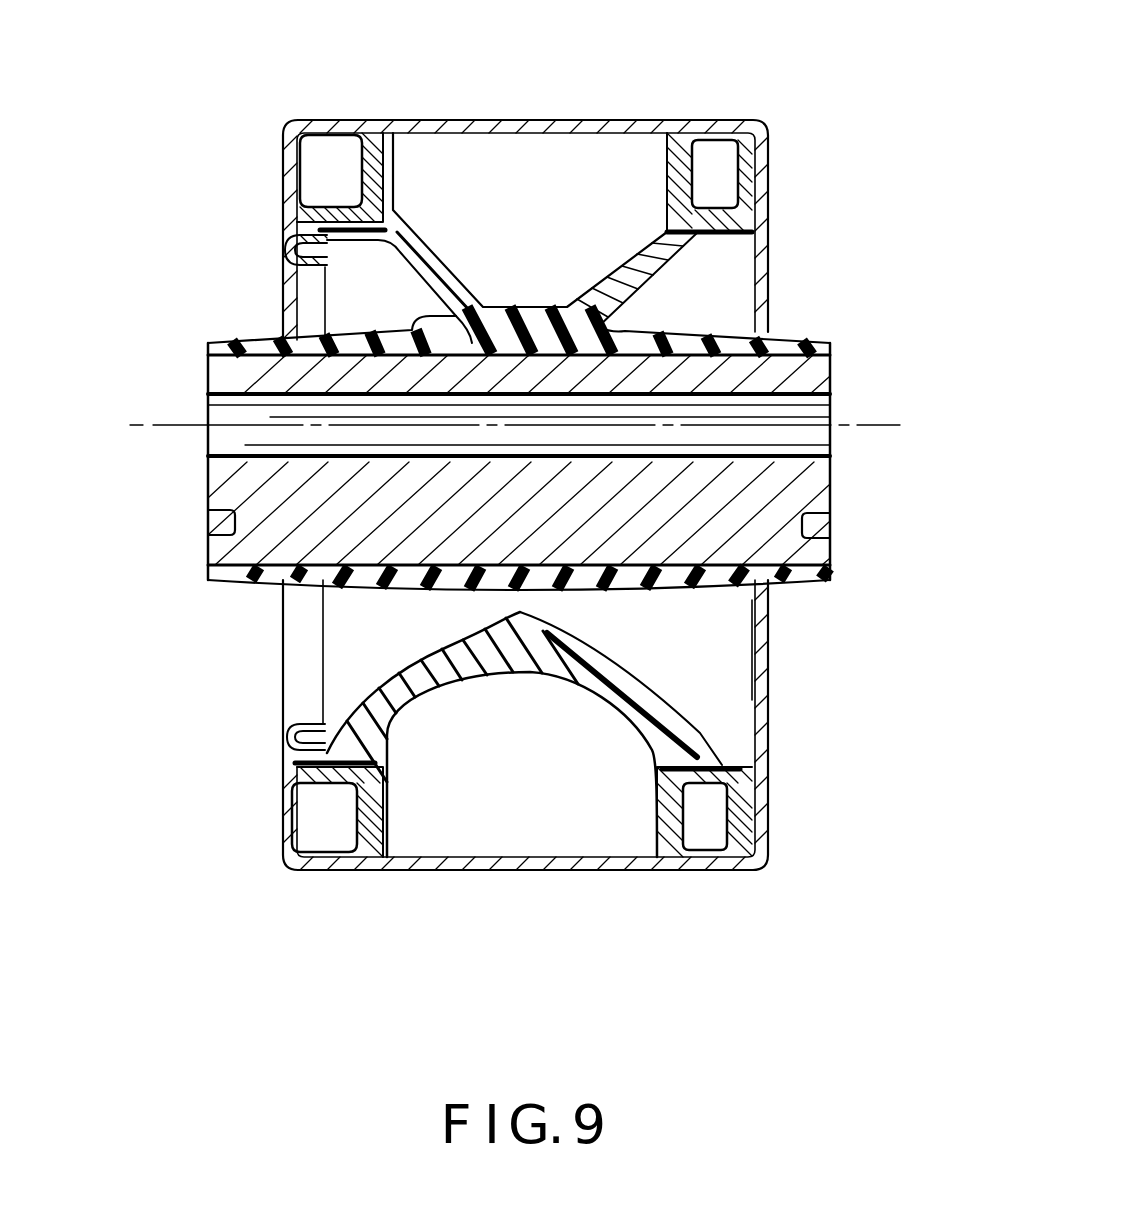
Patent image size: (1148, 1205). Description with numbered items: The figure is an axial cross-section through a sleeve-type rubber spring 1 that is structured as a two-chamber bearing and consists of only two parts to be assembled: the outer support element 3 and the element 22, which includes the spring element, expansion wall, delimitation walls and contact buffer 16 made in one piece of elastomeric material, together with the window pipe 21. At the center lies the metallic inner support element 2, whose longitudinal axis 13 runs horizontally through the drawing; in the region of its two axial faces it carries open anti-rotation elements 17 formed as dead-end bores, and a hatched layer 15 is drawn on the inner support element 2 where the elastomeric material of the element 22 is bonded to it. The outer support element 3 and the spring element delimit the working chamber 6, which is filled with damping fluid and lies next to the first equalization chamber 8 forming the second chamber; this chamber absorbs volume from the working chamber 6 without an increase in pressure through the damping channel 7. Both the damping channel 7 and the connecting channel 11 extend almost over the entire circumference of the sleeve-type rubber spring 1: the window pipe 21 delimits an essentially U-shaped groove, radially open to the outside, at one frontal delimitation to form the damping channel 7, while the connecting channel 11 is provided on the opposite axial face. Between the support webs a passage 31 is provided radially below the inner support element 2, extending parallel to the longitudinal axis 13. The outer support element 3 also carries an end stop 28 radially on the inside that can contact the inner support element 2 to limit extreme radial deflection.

The sleeve-type rubber spring 1 is at (812, 716).
The inner support element 2 is at (800, 378).
The outer support element 3 is at (767, 128).
The working chamber 6 is at (578, 820).
The damping channel 7 is at (713, 182).
The first equalization chamber 8 is at (583, 172).
The connecting channel 11 is at (313, 172).
The longitudinal axis 13 is at (160, 426).
The elastomer base 15 is at (795, 343).
The contact buffer 16 is at (432, 326).
The anti-rotation elements 17 is at (218, 525).
The window pipe 21 is at (343, 122).
The element 22 is at (320, 757).
The end stop 28 is at (287, 247).
The passage 31 is at (547, 607).